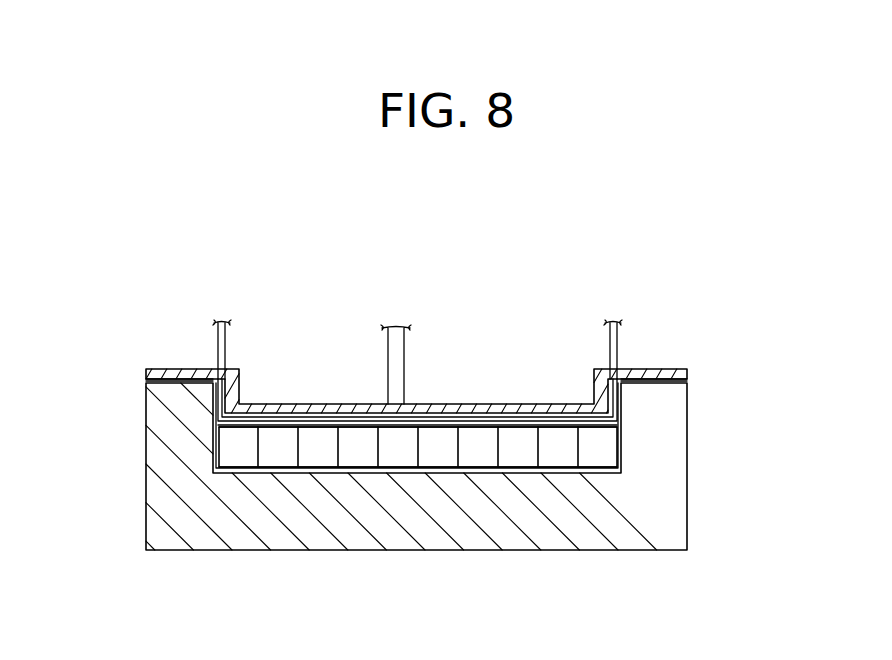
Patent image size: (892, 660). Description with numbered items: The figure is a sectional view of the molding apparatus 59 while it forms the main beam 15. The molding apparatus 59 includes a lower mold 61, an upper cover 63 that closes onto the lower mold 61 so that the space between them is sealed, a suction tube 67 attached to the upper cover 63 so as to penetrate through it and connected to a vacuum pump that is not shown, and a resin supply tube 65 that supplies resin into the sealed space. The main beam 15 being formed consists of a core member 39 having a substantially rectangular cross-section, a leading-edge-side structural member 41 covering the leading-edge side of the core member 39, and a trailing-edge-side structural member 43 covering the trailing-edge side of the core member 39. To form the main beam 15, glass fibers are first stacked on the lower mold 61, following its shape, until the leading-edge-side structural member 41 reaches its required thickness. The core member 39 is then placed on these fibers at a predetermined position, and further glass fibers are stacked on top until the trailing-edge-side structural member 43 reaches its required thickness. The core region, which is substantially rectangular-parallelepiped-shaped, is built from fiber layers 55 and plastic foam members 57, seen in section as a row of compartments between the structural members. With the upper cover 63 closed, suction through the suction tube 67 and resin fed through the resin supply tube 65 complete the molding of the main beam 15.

The molding apparatus 59 is at (653, 255).
The lower mold 61 is at (670, 468).
The upper cover 63 is at (678, 369).
The suction tube 67 is at (218, 340).
The resin supply tube 65 is at (405, 362).
The trailing-edge-side structural member 43 is at (320, 424).
The main beam 15 is at (283, 479).
The leading-edge-side structural member 41 is at (568, 468).
The fiber layers 55 is at (460, 450).
The plastic foam members 57 is at (515, 450).
The core member 39 is at (432, 452).